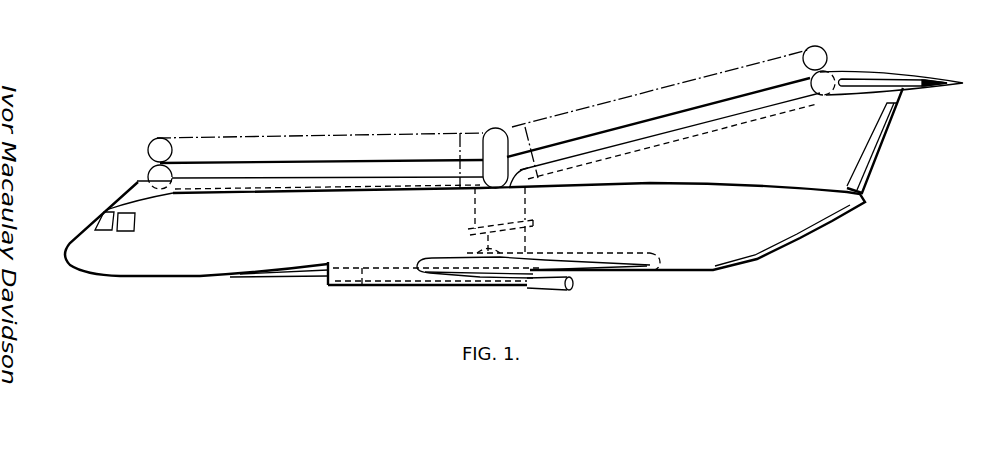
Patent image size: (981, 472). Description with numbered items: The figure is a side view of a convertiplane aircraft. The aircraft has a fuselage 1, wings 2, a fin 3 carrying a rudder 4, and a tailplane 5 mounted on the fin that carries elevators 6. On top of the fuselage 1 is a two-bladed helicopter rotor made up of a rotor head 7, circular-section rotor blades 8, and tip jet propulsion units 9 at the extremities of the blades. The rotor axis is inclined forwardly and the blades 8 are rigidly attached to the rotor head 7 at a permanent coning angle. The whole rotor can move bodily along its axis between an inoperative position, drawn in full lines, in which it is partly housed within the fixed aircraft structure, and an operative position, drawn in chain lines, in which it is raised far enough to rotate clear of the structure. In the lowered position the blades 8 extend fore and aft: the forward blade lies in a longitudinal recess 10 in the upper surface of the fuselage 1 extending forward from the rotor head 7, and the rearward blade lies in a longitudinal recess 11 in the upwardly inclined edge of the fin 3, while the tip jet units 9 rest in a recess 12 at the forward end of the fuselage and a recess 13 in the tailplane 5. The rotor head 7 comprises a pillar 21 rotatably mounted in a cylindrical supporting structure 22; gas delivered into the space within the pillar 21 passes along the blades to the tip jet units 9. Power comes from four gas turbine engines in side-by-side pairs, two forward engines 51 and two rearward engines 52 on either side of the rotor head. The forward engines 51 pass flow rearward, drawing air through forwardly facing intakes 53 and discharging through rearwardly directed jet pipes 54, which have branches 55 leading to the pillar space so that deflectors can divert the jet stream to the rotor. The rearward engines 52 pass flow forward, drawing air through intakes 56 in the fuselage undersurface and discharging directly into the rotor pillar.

The fuselage 1 is at (165, 277).
The wings 2 is at (457, 270).
The fin 3 is at (863, 122).
The rudder 4 is at (868, 158).
The tailplane 5 is at (908, 80).
The elevators 6 is at (948, 80).
The rotor head 7 is at (493, 160).
The rotor blades 8 is at (282, 168).
The tip jet propulsion units 9 is at (148, 166).
The longitudinal recess 10 is at (260, 192).
The longitudinal recess 11 is at (670, 137).
The recess 12 is at (150, 186).
The recess 13 is at (832, 70).
The pillar 21 is at (525, 232).
The cylindrical supporting structure 22 is at (525, 208).
The forward engines 51 is at (381, 288).
The rearward engines 52 is at (617, 270).
The intakes 53 is at (328, 283).
The jet pipes 54 is at (553, 288).
The branches 55 is at (477, 265).
The intakes 56 is at (655, 270).